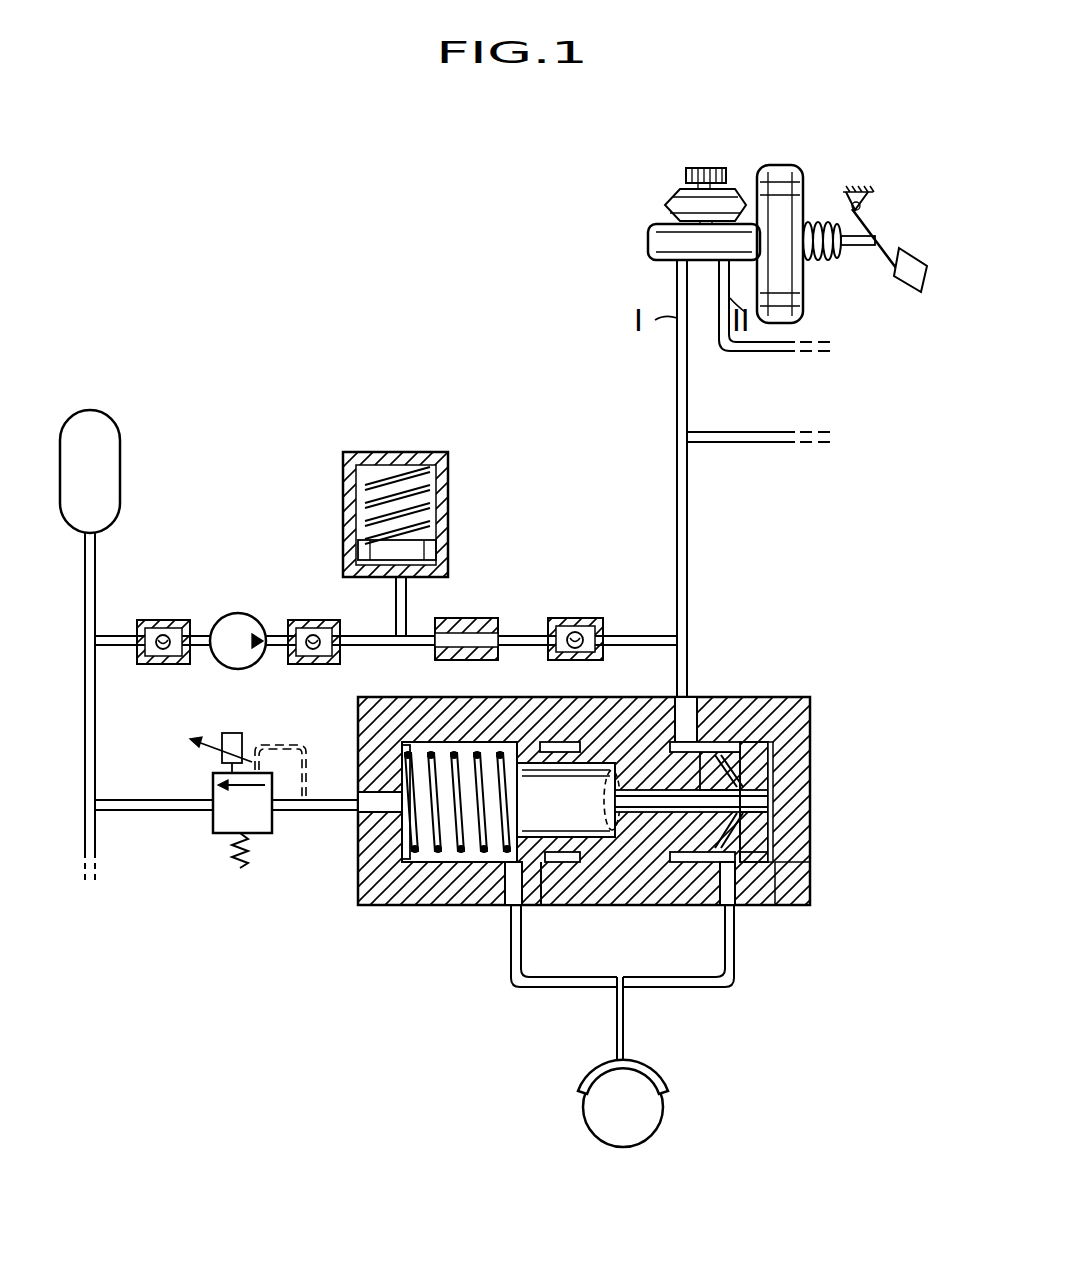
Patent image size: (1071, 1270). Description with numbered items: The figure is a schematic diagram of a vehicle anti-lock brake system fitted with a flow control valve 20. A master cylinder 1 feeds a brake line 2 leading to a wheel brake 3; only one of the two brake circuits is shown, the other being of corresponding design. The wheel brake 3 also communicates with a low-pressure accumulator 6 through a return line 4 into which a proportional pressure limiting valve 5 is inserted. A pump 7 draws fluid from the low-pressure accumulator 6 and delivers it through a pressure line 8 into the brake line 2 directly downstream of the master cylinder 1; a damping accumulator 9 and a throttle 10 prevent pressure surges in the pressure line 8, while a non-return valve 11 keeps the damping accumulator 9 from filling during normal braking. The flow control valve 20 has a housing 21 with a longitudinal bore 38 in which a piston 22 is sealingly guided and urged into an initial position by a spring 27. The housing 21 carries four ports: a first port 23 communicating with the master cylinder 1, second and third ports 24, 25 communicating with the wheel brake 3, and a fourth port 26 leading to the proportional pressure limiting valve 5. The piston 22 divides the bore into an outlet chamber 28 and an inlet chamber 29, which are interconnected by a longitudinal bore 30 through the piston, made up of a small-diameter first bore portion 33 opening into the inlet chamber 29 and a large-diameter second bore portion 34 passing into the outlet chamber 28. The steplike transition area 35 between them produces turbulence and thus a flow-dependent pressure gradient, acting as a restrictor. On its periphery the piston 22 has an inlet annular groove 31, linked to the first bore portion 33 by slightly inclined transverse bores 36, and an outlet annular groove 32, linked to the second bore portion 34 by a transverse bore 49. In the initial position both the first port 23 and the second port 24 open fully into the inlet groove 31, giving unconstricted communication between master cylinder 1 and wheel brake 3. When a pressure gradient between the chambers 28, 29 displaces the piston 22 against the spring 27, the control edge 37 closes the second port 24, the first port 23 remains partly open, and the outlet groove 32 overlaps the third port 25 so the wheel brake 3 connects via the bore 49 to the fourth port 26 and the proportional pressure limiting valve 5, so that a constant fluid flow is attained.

The master cylinder 1 is at (646, 222).
The brake line 2 is at (681, 376).
The wheel brake 3 is at (665, 1090).
The return line 4 is at (323, 807).
The proportional pressure limiting valve 5 is at (211, 816).
The low-pressure accumulator 6 is at (110, 452).
The pump 7 is at (237, 622).
The pressure line 8 is at (370, 636).
The damping accumulator 9 is at (420, 452).
The throttle 10 is at (465, 618).
The non-return valve 11 is at (570, 618).
The flow control valve 20 is at (812, 745).
The housing 21 is at (802, 880).
The piston 22 is at (750, 904).
The first port 23 is at (690, 697).
The second port 24 is at (733, 909).
The third port 25 is at (507, 906).
The fourth port 26 is at (357, 813).
The spring 27 is at (423, 900).
The outlet chamber 28 is at (405, 856).
The inlet chamber 29 is at (777, 814).
The longitudinal bore 30 is at (752, 803).
The inlet annular groove 31 is at (735, 742).
The outlet annular groove 32 is at (550, 742).
The first bore portion 33 is at (680, 906).
The second bore portion 34 is at (548, 875).
The transition area 35 is at (650, 760).
The transverse bores 36 is at (735, 772).
The control edge 37 is at (752, 752).
The longitudinal bore 38 is at (415, 740).
The transverse bore 49 is at (540, 912).